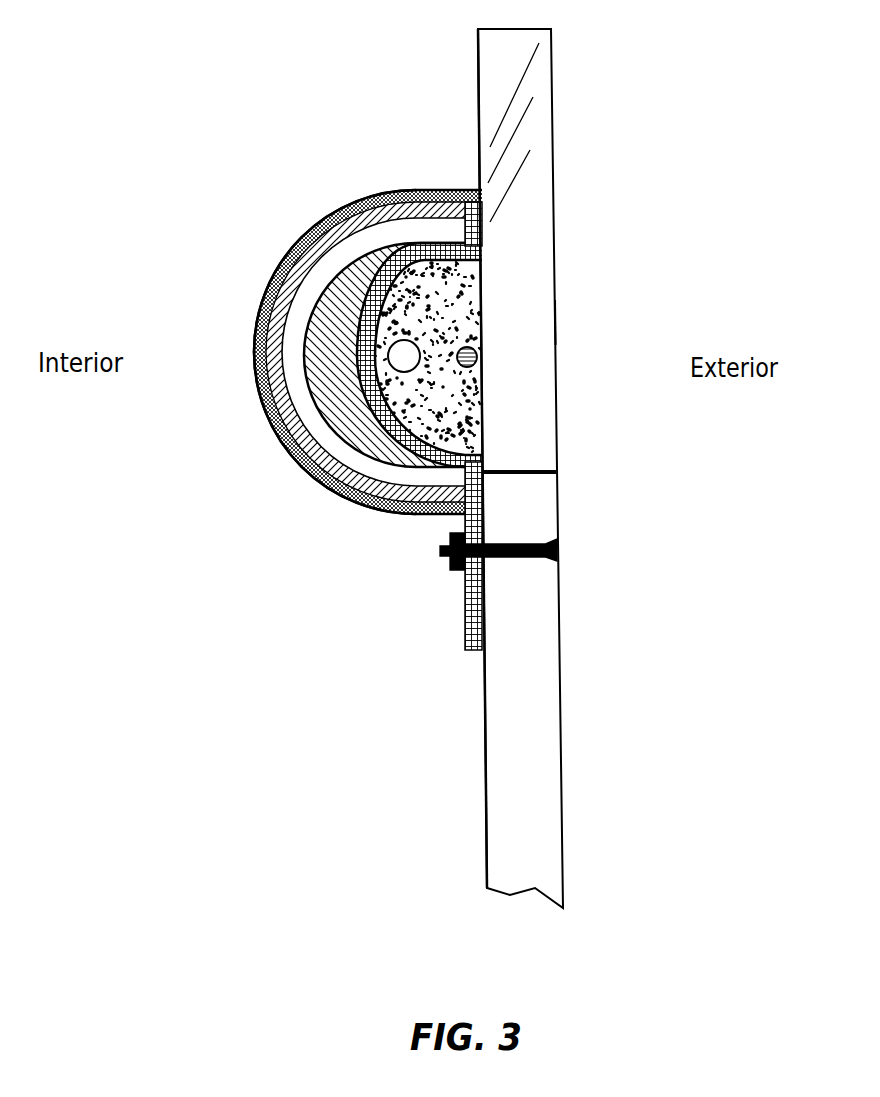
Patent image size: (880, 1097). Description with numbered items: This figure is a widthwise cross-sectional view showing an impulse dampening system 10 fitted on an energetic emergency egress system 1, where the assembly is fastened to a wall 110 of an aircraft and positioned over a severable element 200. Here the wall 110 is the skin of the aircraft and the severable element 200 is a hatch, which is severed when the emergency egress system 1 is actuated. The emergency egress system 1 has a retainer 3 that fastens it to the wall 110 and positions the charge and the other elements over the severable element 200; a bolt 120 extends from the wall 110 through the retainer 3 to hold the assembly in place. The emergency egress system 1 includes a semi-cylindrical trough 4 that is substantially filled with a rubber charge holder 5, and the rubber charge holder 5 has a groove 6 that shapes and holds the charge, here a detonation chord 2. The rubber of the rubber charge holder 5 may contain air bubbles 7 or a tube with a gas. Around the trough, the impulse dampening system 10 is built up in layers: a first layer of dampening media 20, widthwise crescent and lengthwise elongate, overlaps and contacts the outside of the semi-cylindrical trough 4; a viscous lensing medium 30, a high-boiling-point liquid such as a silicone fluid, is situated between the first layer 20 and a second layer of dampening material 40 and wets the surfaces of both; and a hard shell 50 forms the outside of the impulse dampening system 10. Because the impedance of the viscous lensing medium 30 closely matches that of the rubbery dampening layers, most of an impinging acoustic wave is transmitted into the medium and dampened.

The impulse dampening system 10 is at (231, 446).
The wall 110 is at (538, 773).
The severable element 200 is at (555, 320).
The emergency egress system 1 is at (452, 312).
The detonation chord 2 is at (475, 356).
The retainer 3 is at (467, 608).
The semi-cylindrical trough 4 is at (493, 473).
The rubber charge holder 5 is at (463, 413).
The groove 6 is at (473, 362).
The air bubbles 7 is at (398, 352).
The first layer of dampening media 20 is at (351, 331).
The viscous lensing medium 30 is at (401, 250).
The second layer of dampening material 40 is at (338, 463).
The hard shell 50 is at (394, 511).
The bolt 120 is at (443, 552).